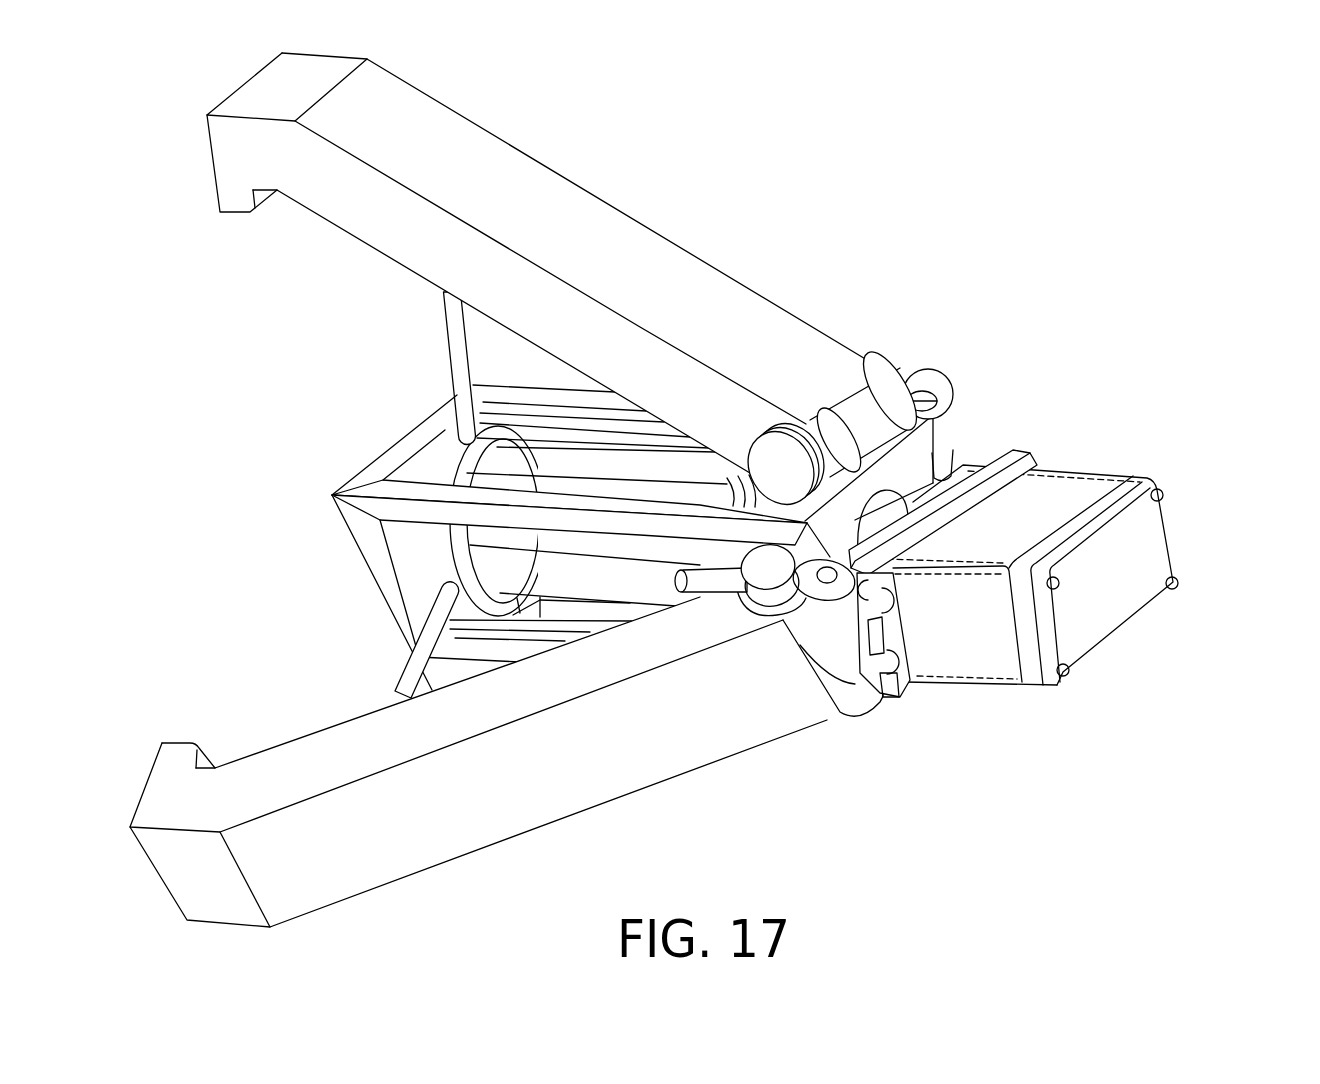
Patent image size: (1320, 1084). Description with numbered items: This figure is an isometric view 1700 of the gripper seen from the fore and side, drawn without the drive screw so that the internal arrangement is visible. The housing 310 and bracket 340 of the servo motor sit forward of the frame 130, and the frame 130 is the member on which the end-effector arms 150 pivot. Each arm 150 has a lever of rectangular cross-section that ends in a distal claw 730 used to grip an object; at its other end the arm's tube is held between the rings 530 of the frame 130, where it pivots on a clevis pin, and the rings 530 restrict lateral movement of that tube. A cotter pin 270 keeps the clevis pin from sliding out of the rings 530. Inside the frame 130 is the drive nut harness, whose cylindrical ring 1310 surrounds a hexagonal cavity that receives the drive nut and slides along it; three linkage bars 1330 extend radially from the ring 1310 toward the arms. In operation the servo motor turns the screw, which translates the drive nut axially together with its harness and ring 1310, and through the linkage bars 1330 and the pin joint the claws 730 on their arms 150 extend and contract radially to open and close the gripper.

The isometric view 1700 is at (1118, 110).
The end-effector arm 150 is at (621, 208).
The rings 530 is at (897, 352).
The cotter pin 270 is at (957, 385).
The bracket 340 is at (1050, 465).
The housing 310 is at (1185, 530).
The cylindrical ring 1310 is at (442, 440).
The frame 130 is at (345, 519).
The linkage bars 1330 is at (400, 687).
The distal claw 730 is at (178, 743).